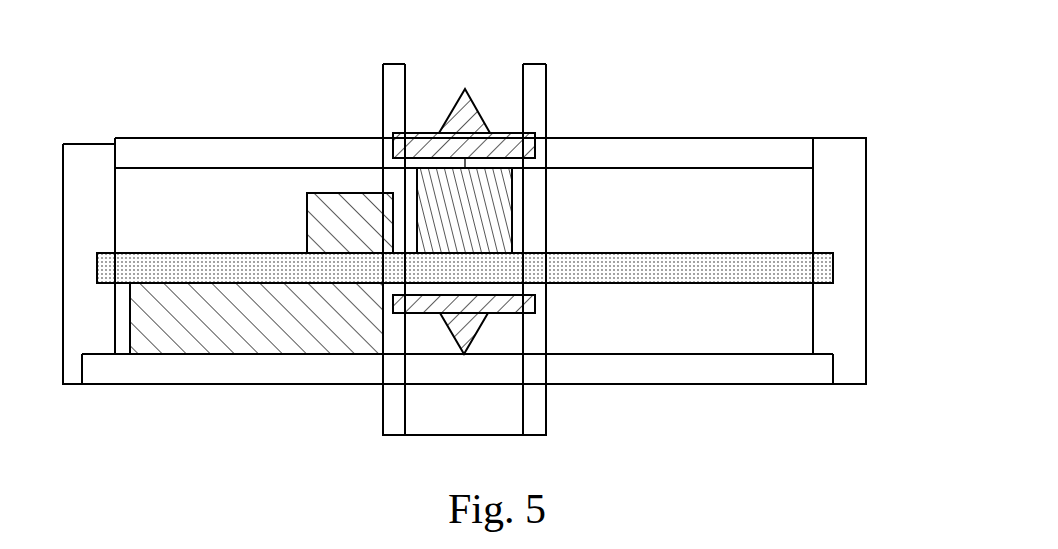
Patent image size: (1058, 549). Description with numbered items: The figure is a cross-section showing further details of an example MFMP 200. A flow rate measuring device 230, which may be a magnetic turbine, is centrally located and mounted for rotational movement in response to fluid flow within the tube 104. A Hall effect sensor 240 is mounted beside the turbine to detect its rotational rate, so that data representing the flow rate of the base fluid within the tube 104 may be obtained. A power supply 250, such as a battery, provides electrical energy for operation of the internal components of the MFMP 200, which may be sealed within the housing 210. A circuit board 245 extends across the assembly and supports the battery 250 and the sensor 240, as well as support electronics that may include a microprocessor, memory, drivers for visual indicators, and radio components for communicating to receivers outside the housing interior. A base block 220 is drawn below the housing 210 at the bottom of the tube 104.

The tube 104 is at (535, 72).
The MFMP 200 is at (843, 97).
The housing 210 is at (845, 339).
The base block 220 is at (535, 407).
The flow rate measuring device 230 is at (498, 139).
The Hall effect sensor 240 is at (320, 225).
The circuit board 245 is at (817, 267).
The power supply 250 is at (242, 335).